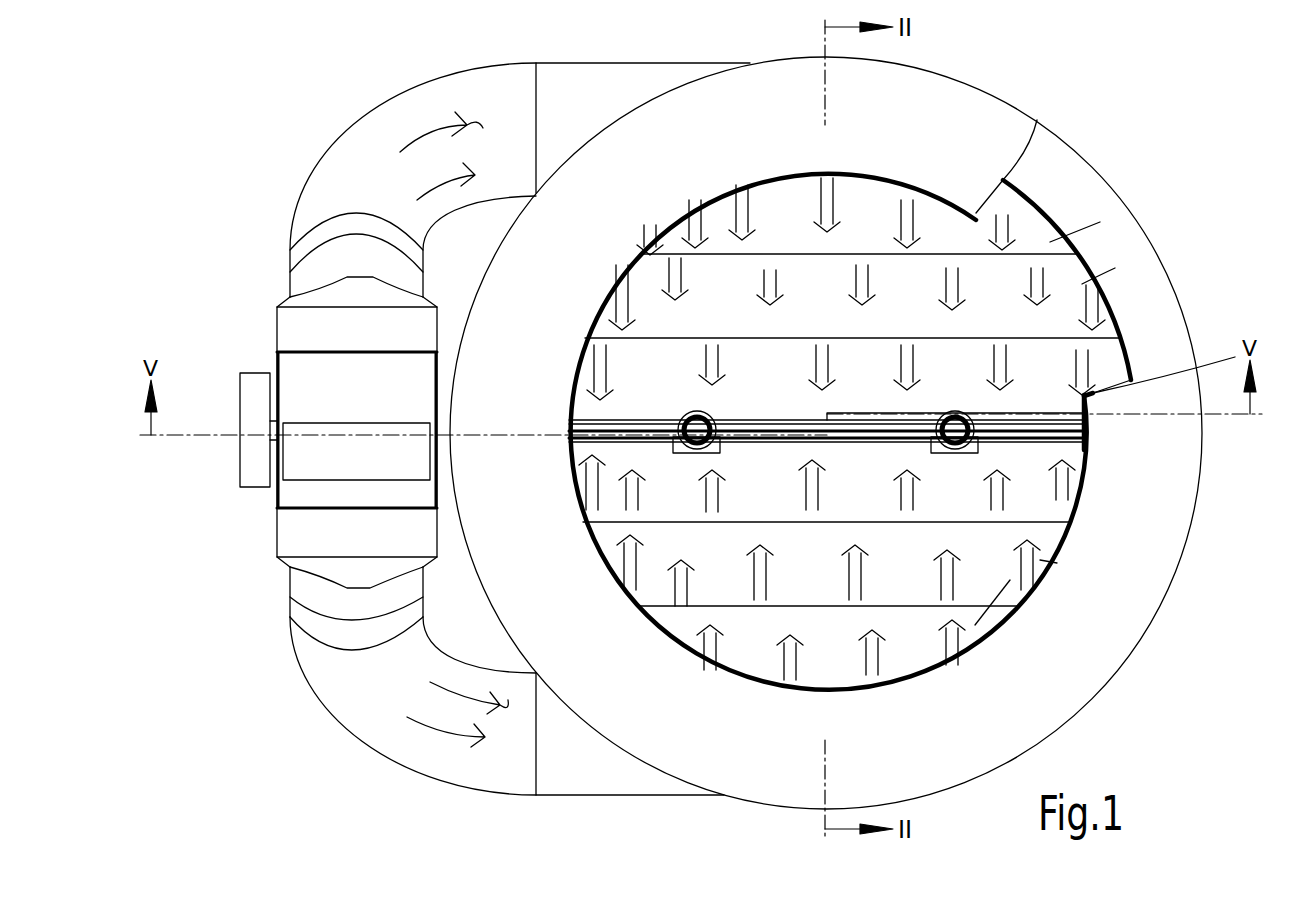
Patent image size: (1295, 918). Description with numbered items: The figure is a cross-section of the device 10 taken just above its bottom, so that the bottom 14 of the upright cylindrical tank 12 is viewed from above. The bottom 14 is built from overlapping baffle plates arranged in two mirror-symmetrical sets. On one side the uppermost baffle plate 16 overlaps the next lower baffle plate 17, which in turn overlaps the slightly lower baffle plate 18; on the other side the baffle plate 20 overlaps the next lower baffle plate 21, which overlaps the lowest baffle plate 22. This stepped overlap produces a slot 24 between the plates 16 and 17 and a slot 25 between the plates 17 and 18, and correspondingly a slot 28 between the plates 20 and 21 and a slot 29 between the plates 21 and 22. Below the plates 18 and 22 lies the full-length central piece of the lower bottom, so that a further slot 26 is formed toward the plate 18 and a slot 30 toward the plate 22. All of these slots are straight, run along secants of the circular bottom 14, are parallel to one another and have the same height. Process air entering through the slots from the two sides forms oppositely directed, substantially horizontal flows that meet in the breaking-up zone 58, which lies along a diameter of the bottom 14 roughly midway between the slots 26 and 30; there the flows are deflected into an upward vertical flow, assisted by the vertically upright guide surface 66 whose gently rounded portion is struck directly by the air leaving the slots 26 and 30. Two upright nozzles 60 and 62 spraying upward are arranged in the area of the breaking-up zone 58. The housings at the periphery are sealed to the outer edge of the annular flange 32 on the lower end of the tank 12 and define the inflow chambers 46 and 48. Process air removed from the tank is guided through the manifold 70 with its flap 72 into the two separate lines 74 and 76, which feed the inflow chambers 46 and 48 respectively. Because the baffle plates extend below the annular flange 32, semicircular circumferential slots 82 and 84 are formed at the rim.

The device 10 is at (1155, 170).
The upright cylindrical tank 12 is at (1077, 530).
The bottom 14 is at (703, 223).
The baffle plate 16 is at (1050, 242).
The baffle plate 17 is at (1082, 284).
The baffle plate 18 is at (1113, 344).
The baffle plate 20 is at (977, 622).
The baffle plate 21 is at (1057, 563).
The baffle plate 22 is at (1072, 448).
The slot 24 is at (738, 256).
The slot 25 is at (683, 338).
The slot 26 is at (632, 420).
The slot 28 is at (712, 606).
The slot 29 is at (751, 522).
The slot 30 is at (752, 440).
The annular flange 32 is at (1068, 175).
The inflow chamber 46 is at (650, 80).
The inflow chamber 48 is at (626, 780).
The breaking-up zone 58 is at (762, 420).
The nozzle 60 is at (955, 410).
The nozzle 62 is at (690, 452).
The guide surface 66 is at (878, 440).
The manifold 70 is at (277, 362).
The flap 72 is at (308, 452).
The line 74 is at (343, 172).
The line 76 is at (353, 710).
The semicircular circumferential slot 82 is at (779, 176).
The semicircular circumferential slot 84 is at (915, 668).